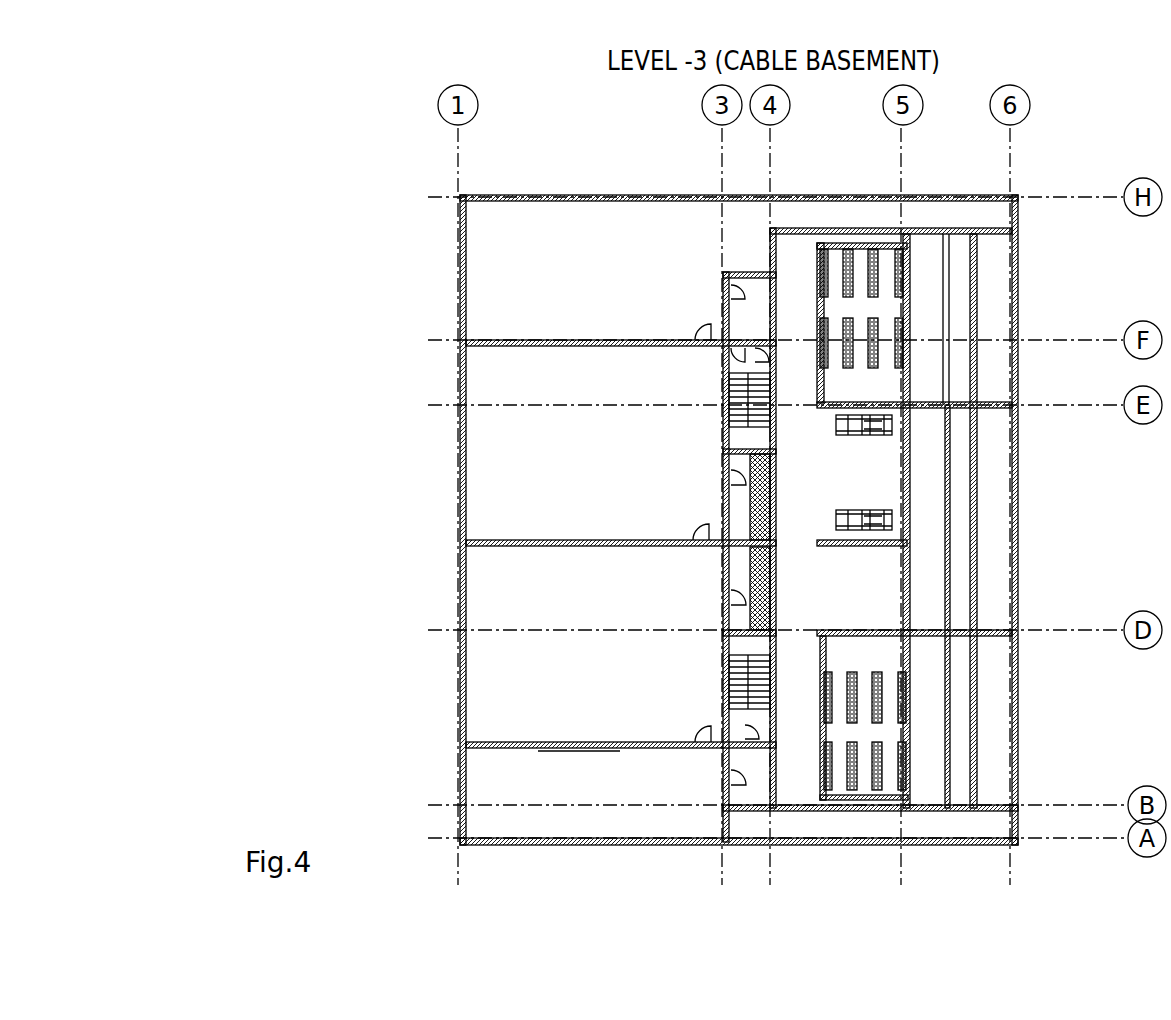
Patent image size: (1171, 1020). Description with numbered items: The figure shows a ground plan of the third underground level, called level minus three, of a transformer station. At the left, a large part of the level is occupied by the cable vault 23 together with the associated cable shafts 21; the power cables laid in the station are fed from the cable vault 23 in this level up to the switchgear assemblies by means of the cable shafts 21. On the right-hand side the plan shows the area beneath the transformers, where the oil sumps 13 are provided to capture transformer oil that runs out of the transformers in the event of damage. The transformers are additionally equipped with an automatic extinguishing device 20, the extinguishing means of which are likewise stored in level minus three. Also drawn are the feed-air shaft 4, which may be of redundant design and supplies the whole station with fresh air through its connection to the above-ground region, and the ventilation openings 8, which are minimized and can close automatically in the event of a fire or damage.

The feed-air shaft 4 is at (873, 240).
The ventilation openings 8 is at (880, 795).
The oil sumps 13 is at (993, 544).
The automatic extinguishing device 20 is at (845, 250).
The cable shafts 21 is at (545, 240).
The cable vault 23 is at (528, 470).